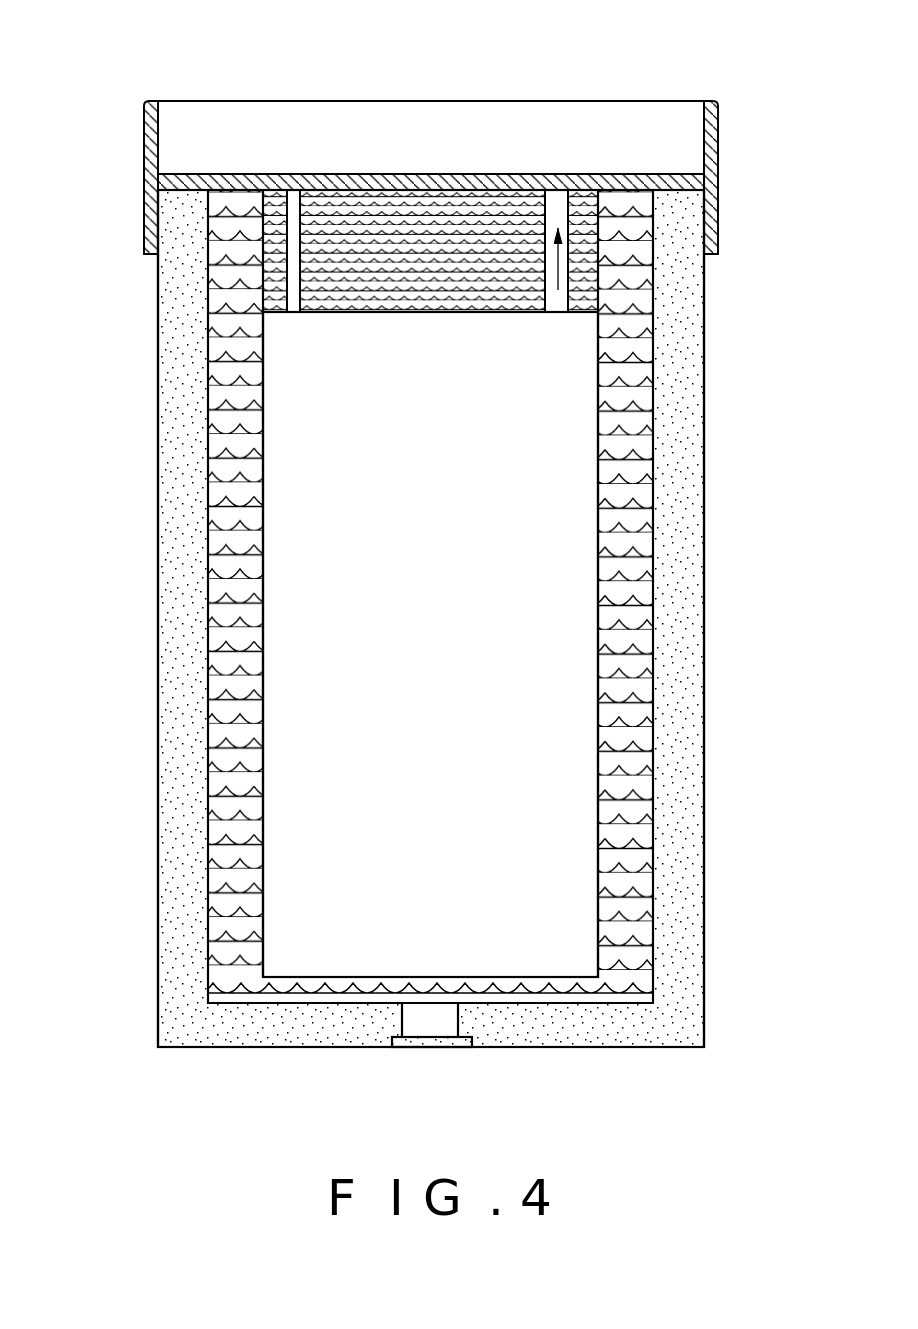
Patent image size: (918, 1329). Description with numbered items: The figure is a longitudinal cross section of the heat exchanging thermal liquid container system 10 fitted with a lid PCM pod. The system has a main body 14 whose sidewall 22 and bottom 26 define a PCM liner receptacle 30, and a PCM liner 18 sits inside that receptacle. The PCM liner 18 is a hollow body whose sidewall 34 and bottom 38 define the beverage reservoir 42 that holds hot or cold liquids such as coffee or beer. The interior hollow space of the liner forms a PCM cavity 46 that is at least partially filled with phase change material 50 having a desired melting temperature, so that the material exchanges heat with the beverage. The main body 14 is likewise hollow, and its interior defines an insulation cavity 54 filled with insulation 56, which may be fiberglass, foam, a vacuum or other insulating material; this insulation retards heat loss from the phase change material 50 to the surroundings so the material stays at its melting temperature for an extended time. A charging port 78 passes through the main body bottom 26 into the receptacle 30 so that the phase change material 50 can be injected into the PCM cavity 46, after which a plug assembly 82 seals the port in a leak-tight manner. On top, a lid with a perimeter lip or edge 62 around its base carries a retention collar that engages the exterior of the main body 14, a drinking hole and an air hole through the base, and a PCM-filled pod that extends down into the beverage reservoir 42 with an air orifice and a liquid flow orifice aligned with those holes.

The container system 10 is at (838, 308).
The main body 14 is at (706, 530).
The PCM liner 18 is at (598, 601).
The sidewall 22 is at (180, 425).
The bottom 26 is at (593, 1025).
The PCM liner receptacle 30 is at (655, 635).
The sidewall 34 is at (599, 408).
The bottom 38 is at (332, 985).
The beverage reservoir 42 is at (462, 613).
The PCM cavity 46 is at (232, 533).
The phase change material 50 is at (238, 690).
The insulation cavity 54 is at (684, 336).
The insulation 56 is at (180, 712).
The perimeter lip or edge 62 is at (143, 140).
The charging port 78 is at (460, 1018).
The plug assembly 82 is at (425, 1048).